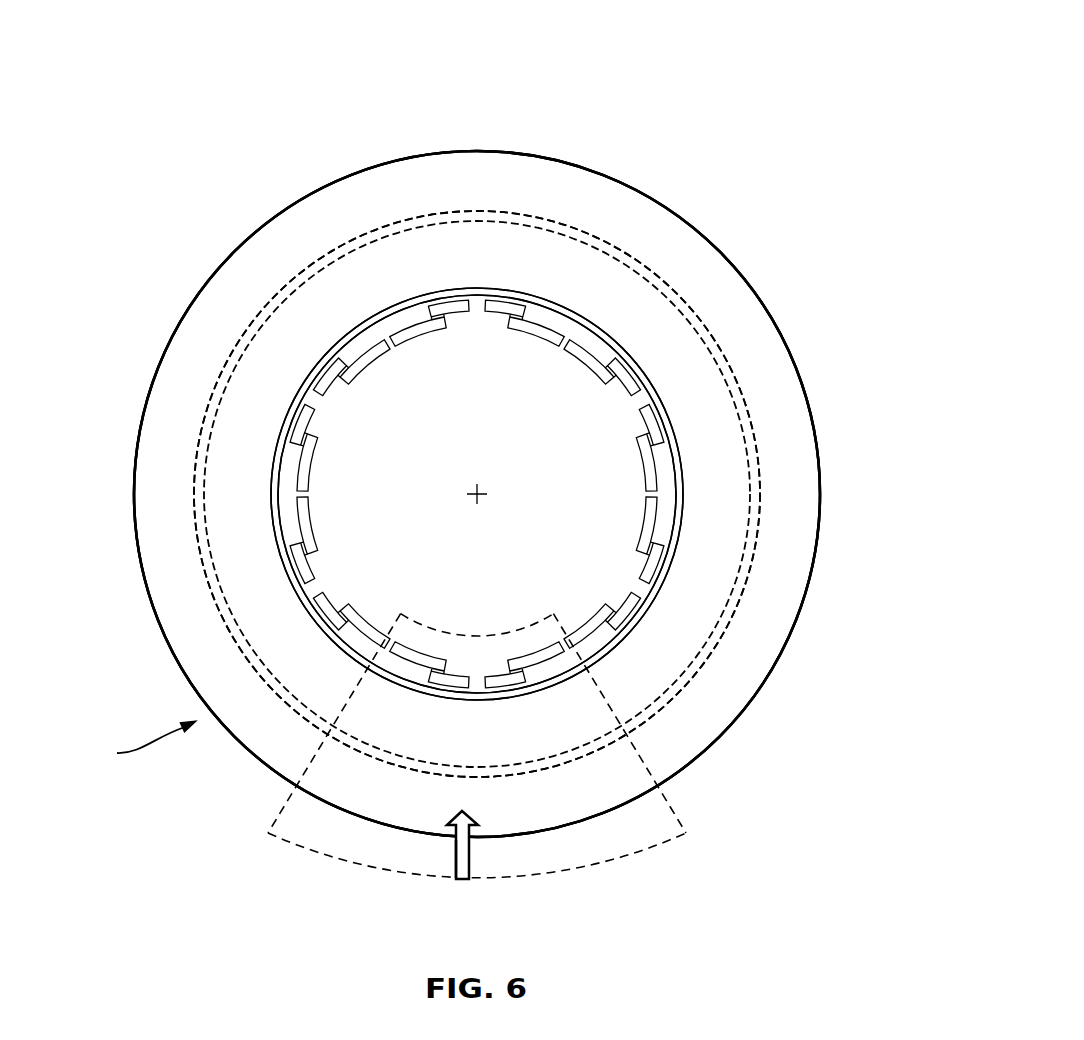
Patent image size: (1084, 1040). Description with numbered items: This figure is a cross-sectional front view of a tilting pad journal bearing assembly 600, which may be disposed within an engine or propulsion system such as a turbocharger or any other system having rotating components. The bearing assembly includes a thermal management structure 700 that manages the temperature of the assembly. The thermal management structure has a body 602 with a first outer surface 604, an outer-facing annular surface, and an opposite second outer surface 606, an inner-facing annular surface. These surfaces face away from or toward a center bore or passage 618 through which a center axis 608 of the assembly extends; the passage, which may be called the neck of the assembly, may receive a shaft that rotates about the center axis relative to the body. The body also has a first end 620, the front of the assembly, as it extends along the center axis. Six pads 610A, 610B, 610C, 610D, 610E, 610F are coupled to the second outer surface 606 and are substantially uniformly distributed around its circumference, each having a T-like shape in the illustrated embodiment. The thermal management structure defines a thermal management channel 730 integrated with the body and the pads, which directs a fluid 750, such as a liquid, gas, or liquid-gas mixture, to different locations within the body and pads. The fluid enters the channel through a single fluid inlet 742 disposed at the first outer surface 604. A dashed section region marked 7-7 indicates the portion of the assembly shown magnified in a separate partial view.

The tilting pad journal bearing assembly 600 is at (823, 54).
The body 602 is at (713, 272).
The first outer surface 604 is at (803, 362).
The second outer surface 606 is at (672, 440).
The center axis 608 is at (477, 494).
The pad 610A is at (477, 323).
The pad 610B is at (333, 410).
The pad 610C is at (333, 582).
The pad 610D is at (477, 662).
The pad 610E is at (623, 578).
The pad 610F is at (620, 413).
The center bore or passage 618 is at (580, 316).
The first end 620 is at (800, 492).
The thermal management structure 700 is at (129, 744).
The thermal management channel 730 is at (715, 637).
The fluid inlet 742 is at (475, 833).
The fluid 750 is at (464, 855).
The section line 7-7 is at (598, 863).